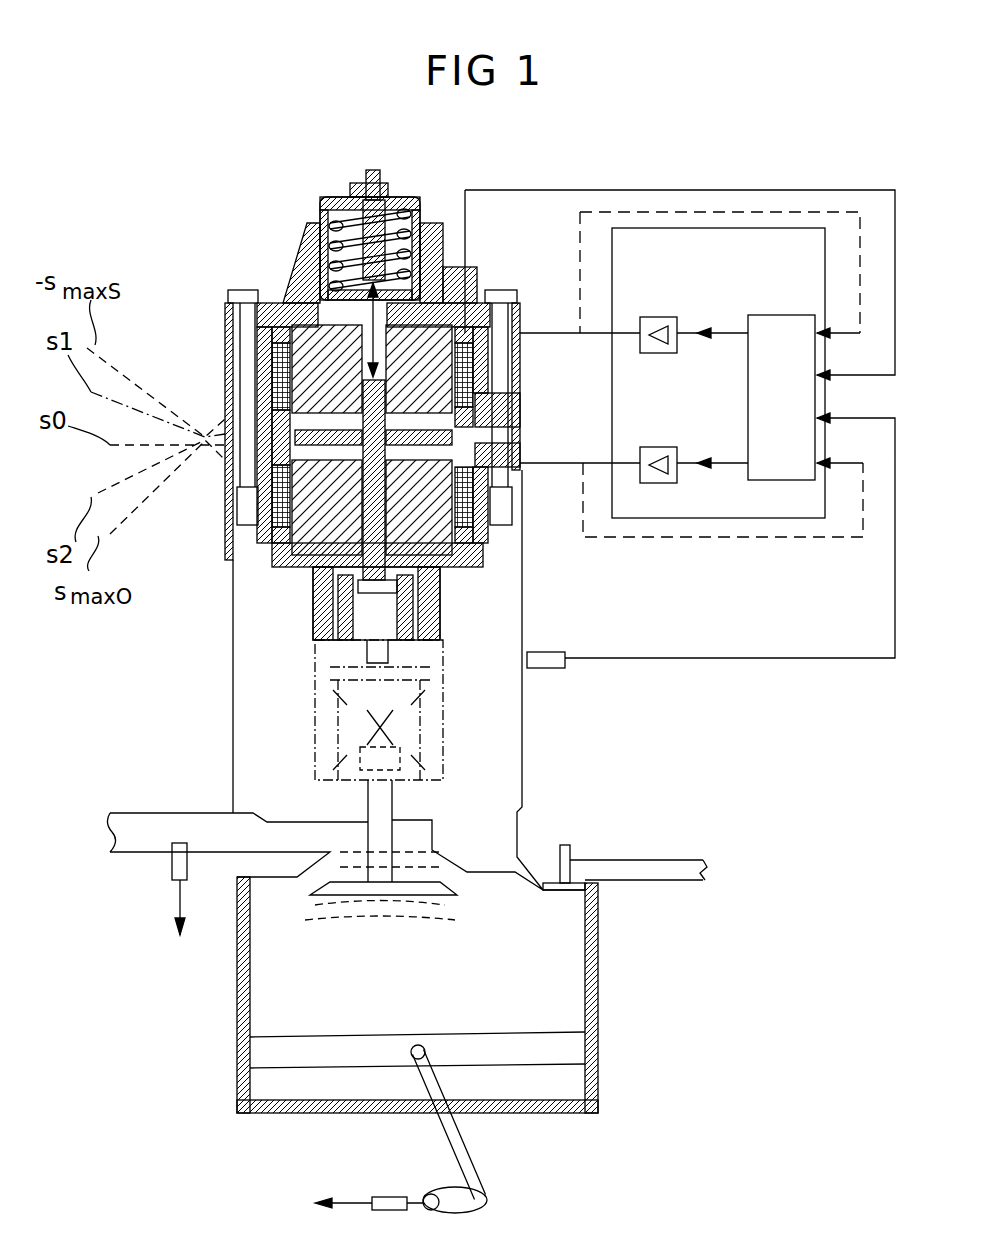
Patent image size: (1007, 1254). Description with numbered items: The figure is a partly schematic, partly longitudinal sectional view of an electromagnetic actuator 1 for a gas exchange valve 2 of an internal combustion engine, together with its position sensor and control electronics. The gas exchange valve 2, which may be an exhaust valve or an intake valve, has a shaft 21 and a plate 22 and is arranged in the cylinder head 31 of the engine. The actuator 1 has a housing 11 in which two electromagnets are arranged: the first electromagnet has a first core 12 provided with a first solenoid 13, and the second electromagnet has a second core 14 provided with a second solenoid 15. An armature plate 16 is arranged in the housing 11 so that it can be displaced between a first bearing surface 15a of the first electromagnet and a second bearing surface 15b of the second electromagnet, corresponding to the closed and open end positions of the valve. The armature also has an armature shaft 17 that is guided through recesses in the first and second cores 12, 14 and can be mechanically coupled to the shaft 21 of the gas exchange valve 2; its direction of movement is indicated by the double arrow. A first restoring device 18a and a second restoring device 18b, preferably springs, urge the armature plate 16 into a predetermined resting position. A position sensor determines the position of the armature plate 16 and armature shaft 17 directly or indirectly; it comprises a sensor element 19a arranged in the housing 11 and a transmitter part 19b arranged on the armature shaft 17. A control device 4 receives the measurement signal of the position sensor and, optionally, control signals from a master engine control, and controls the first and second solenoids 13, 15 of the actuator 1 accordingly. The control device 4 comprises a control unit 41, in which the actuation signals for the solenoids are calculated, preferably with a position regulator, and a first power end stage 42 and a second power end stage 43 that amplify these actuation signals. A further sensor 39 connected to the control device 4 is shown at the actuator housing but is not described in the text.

The actuator 1 is at (150, 228).
The gas exchange valve 2 is at (377, 870).
The control device 4 is at (680, 400).
The housing 11 is at (307, 240).
The first core 12 is at (233, 323).
The first solenoid 13 is at (250, 360).
The second core 14 is at (300, 578).
The second solenoid 15 is at (272, 548).
The first bearing surface 15a is at (522, 407).
The second bearing surface 15b is at (522, 455).
The armature plate 16 is at (300, 427).
The armature shaft 17 is at (300, 268).
The first restoring device 18a is at (343, 193).
The second restoring device 18b is at (337, 677).
The sensor element 19a is at (467, 283).
The transmitter part 19b is at (430, 270).
The shaft 21 is at (392, 835).
The plate 22 is at (330, 893).
The cylinder head 31 is at (503, 838).
The flow sensor 39 is at (555, 652).
The control unit 41 is at (778, 337).
The first power end stage 42 is at (680, 320).
The second power end stage 43 is at (683, 452).